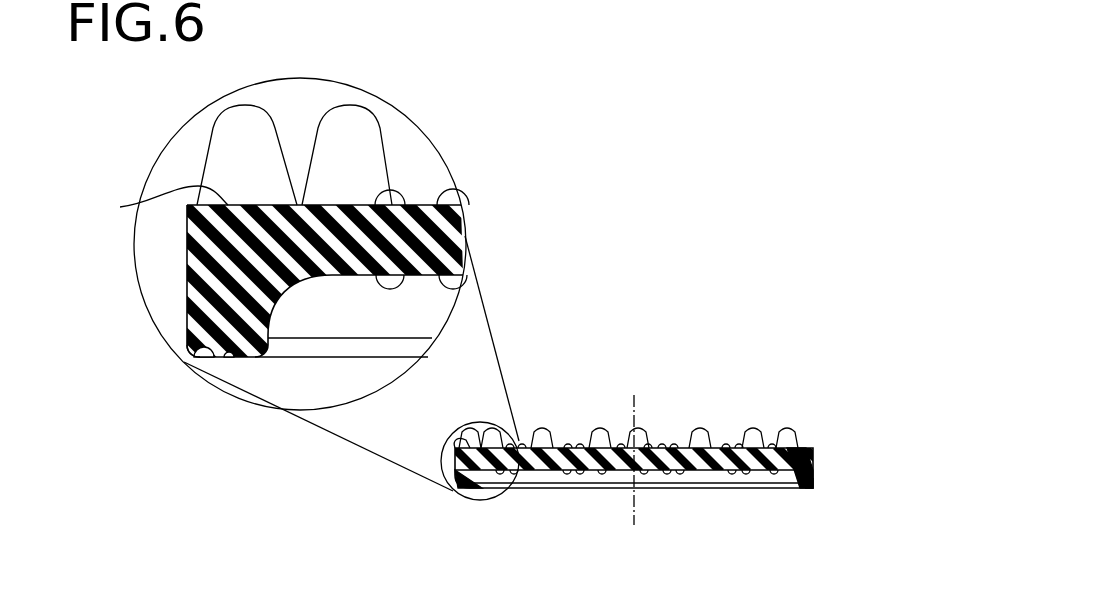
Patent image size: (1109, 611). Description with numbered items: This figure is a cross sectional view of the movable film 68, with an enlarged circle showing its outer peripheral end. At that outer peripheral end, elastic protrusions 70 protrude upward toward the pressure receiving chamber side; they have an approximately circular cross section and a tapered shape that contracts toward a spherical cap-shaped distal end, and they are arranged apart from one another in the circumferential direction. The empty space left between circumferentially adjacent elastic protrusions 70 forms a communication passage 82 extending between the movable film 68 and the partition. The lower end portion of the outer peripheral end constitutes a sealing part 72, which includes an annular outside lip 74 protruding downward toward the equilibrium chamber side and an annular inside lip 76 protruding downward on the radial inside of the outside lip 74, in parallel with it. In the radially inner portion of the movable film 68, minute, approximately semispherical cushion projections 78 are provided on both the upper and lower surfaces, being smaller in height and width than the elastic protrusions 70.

The movable film 68 is at (165, 282).
The elastic protrusion 70 is at (238, 158).
The sealing part 72 is at (180, 363).
The outside lip 74 is at (203, 349).
The inside lip 76 is at (245, 349).
The cushion projection 78 is at (396, 200).
The communication passage 82 is at (120, 207).